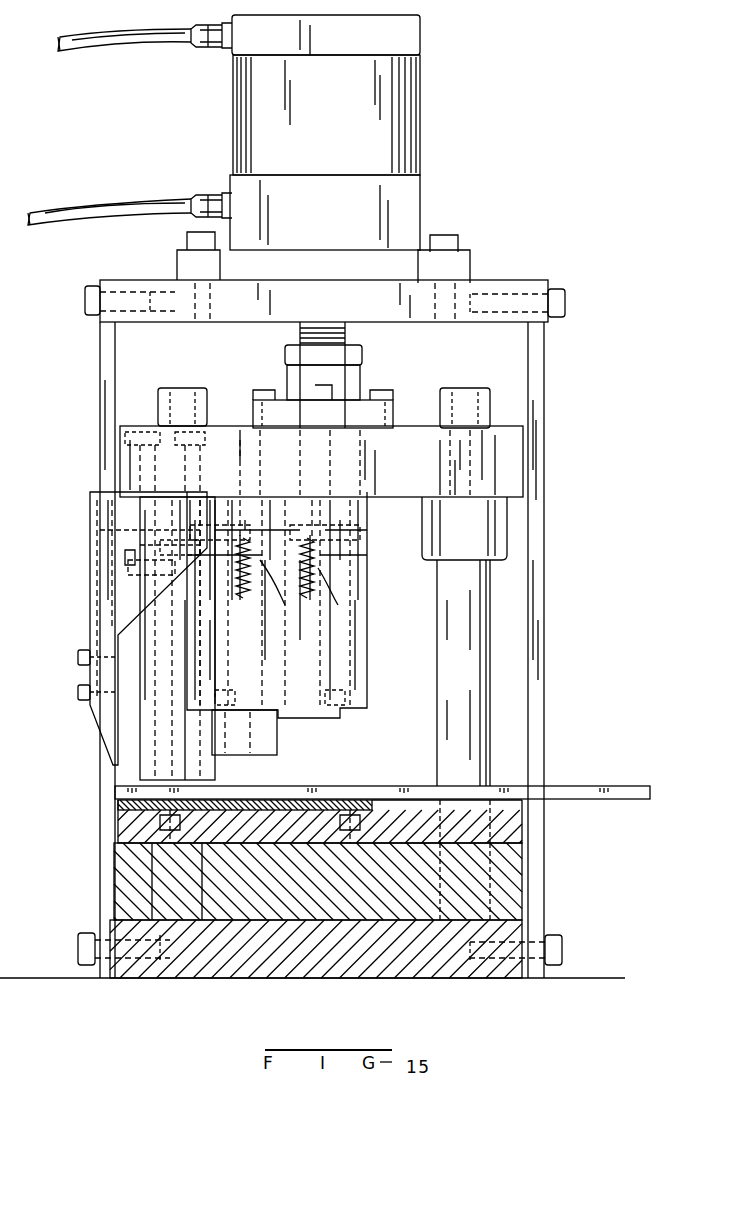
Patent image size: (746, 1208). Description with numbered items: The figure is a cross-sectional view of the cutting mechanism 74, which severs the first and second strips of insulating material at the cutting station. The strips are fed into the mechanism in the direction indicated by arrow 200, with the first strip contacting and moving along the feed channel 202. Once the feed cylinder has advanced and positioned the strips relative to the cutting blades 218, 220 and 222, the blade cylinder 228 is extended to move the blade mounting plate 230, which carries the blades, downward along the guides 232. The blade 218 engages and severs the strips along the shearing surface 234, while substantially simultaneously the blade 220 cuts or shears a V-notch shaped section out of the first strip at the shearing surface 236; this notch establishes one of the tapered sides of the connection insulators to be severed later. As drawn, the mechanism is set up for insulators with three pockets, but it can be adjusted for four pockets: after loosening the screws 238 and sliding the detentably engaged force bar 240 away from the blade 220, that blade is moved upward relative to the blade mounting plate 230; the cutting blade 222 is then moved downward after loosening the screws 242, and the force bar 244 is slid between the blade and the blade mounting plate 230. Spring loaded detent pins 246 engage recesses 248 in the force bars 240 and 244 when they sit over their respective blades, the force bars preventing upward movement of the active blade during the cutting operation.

The cutting mechanism 74 is at (580, 128).
The arrows 200 is at (656, 793).
The feed channel 202 is at (555, 792).
The cutting blade 218 is at (113, 765).
The cutting blade 220 is at (265, 745).
The cutting blade 222 is at (302, 599).
The blade cylinder 228 is at (398, 104).
The blade mounting plate 230 is at (525, 470).
The guides 232 is at (190, 390).
The shearing surface 234 is at (118, 797).
The shearing surface 236 is at (250, 838).
The screws 238 is at (160, 572).
The force bar 240 is at (270, 515).
The screws 242 is at (340, 556).
The force bar 244 is at (328, 520).
The spring loaded detent pins 246 is at (305, 604).
The recesses 248 is at (318, 532).